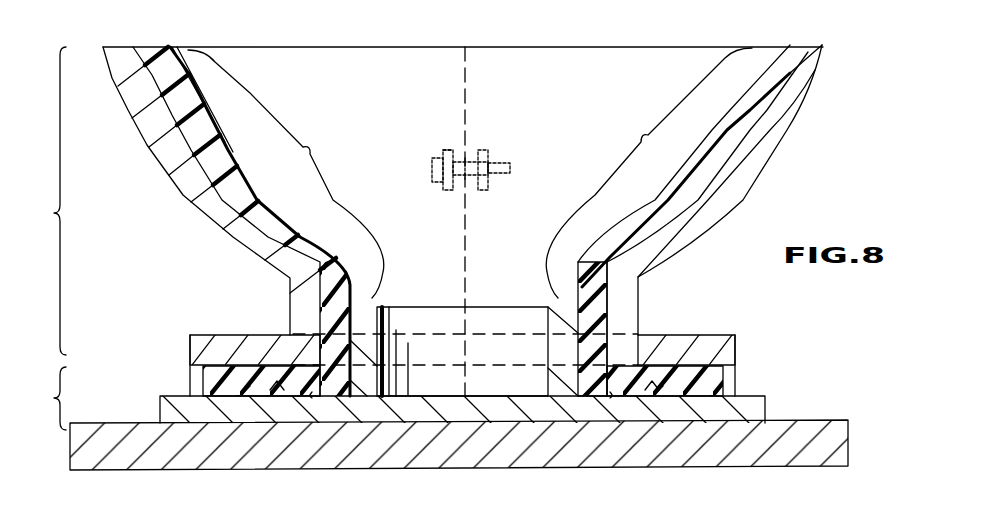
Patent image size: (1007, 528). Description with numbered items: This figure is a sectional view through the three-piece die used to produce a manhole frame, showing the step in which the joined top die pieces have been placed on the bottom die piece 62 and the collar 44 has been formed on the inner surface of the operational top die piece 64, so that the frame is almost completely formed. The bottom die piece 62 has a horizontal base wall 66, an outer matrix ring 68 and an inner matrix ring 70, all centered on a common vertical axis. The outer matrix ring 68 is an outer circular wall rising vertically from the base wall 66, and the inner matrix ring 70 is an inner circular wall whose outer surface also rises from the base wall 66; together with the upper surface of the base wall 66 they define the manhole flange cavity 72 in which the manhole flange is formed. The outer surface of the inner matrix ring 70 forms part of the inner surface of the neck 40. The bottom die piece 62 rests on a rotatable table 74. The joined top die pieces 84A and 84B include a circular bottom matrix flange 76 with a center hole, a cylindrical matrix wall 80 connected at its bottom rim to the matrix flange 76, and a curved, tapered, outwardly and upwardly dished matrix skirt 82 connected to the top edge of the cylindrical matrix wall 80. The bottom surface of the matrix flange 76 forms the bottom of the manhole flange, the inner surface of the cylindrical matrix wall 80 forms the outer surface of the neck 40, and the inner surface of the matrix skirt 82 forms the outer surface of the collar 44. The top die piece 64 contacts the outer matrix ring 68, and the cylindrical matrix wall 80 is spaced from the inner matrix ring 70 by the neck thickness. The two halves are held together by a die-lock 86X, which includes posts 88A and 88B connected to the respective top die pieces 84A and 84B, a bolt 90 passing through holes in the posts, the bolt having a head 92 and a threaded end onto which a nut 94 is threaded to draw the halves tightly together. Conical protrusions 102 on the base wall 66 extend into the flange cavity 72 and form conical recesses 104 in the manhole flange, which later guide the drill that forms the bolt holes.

The neck 40 is at (723, 155).
The collar 44 is at (150, 47).
The bottom die piece 62 is at (44, 398).
The top die piece 64 is at (43, 201).
The base wall 66 is at (160, 400).
The outer matrix ring 68 is at (189, 375).
The inner matrix ring 70 is at (380, 300).
The manhole flange cavity 72 is at (315, 396).
The rotatable table 74 is at (850, 445).
The bottom matrix flange 76 is at (262, 346).
The cylindrical matrix wall 80 is at (307, 297).
The matrix skirt 82 is at (207, 215).
The top die piece 84A is at (403, 45).
The top die piece 84B is at (615, 45).
The die-lock 86X is at (430, 154).
The post 88A is at (448, 190).
The post 88B is at (484, 190).
The bolt 90 is at (466, 163).
The head 92 is at (431, 170).
The nut 94 is at (490, 175).
The conical protrusions 102 is at (277, 393).
The conical recesses 104 is at (247, 395).